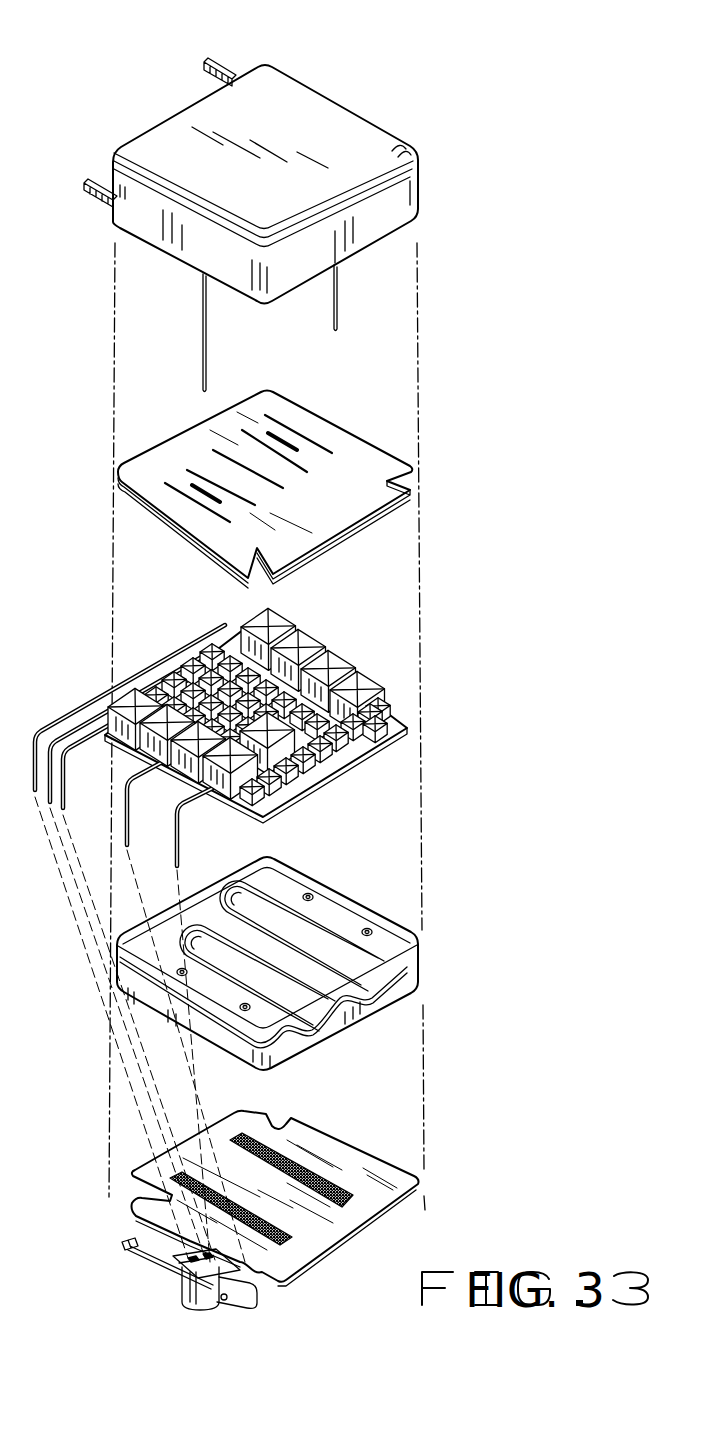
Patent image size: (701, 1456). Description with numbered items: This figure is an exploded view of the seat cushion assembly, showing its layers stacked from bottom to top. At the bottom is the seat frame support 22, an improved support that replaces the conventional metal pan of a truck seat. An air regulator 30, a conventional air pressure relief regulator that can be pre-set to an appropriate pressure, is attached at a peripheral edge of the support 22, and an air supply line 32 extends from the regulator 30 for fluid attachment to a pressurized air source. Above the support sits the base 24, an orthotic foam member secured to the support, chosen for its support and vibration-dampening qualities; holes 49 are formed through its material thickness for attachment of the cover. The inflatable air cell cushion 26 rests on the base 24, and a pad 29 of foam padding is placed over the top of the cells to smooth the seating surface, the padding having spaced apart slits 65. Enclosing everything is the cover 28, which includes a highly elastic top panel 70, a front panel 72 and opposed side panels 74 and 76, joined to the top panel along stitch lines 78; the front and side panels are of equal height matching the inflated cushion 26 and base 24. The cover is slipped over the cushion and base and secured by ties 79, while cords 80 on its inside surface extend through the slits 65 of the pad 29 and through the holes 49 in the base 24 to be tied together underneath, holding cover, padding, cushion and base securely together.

The seat frame support 22 is at (405, 1201).
The base 24 is at (305, 945).
The inflatable air cell cushion 26 is at (337, 630).
The cover 28 is at (269, 204).
The pad 29 is at (309, 482).
The air regulator 30 is at (190, 1300).
The air supply line 32 is at (162, 1270).
The holes 49 is at (309, 892).
The slits 65 is at (283, 441).
The top panel 70 is at (305, 129).
The front panel 72 is at (376, 216).
The side panel 74 is at (183, 235).
The side panel 76 is at (397, 152).
The stitch lines 78 is at (176, 181).
The ties 79 is at (220, 73).
The cords 80 is at (207, 343).